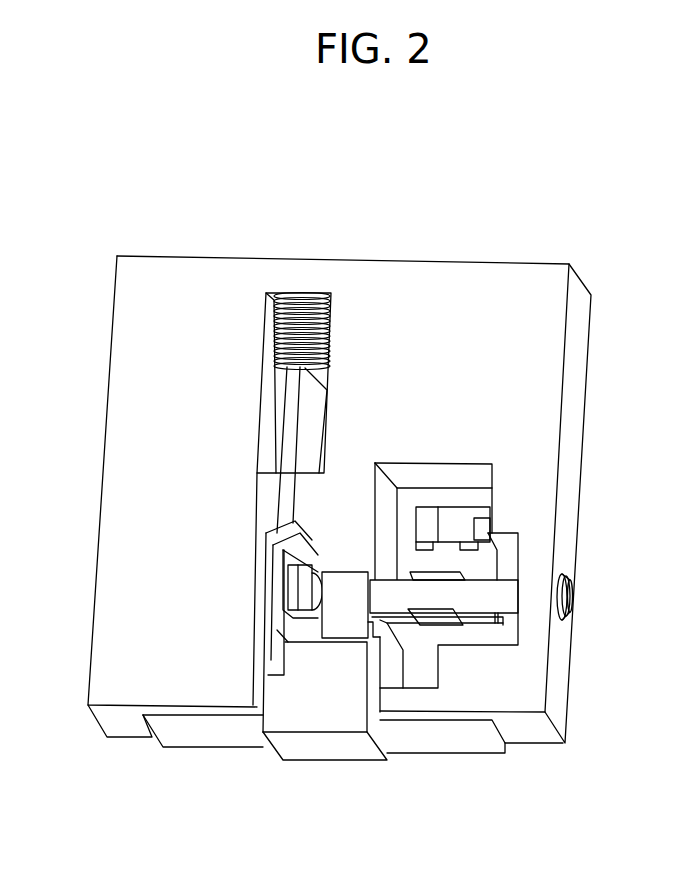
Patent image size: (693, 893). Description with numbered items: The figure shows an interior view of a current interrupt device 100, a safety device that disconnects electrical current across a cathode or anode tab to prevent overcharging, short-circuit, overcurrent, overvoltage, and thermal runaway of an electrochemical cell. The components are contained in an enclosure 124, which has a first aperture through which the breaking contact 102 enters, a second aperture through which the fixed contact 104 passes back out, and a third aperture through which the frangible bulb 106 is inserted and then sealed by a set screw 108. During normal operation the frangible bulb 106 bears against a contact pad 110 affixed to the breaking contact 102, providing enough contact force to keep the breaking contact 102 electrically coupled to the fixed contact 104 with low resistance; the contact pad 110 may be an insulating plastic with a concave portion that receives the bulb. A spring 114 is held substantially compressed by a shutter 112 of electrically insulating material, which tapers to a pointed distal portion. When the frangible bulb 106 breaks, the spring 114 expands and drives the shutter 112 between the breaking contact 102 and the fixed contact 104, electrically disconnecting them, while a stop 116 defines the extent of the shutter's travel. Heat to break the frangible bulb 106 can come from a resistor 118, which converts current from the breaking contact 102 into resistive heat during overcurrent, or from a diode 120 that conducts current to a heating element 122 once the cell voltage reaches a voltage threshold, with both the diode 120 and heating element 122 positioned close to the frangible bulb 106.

The current interrupt device 100 is at (150, 127).
The breaking contact 102 is at (420, 733).
The fixed contact 104 is at (217, 733).
The frangible bulb 106 is at (497, 597).
The set screw 108 is at (573, 597).
The contact pad 110 is at (292, 594).
The shutter 112 is at (285, 497).
The spring 114 is at (306, 312).
The stop 116 is at (275, 680).
The resistor 118 is at (336, 622).
The diode 120 is at (437, 527).
The heating element 122 is at (447, 620).
The enclosure 124 is at (107, 681).